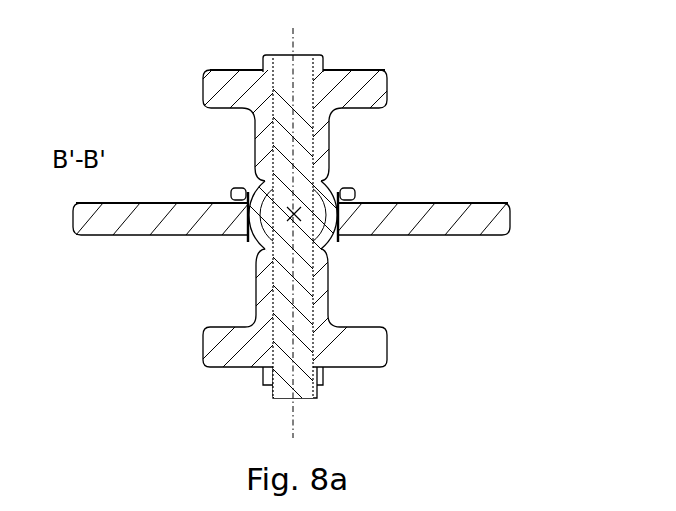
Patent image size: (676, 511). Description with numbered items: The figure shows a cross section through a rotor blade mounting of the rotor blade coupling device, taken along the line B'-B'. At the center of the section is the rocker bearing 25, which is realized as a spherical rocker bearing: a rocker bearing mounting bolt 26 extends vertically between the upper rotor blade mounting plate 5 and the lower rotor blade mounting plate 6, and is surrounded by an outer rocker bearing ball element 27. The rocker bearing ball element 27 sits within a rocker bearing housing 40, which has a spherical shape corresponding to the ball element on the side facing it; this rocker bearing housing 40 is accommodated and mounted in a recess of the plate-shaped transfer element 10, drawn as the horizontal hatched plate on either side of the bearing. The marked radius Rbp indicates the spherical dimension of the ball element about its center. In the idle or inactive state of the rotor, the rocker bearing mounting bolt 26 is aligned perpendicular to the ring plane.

The upper rotor blade mounting plate 5 is at (357, 88).
The lower rotor blade mounting plate 6 is at (368, 347).
The plate-shaped transfer element 10 is at (107, 236).
The rocker bearing 25 is at (211, 145).
The rocker bearing mounting bolt 26 is at (313, 117).
The rocker bearing ball element 27 is at (318, 237).
The rocker bearing housing 40 is at (343, 190).
The ball pivot radius Rbp is at (294, 213).